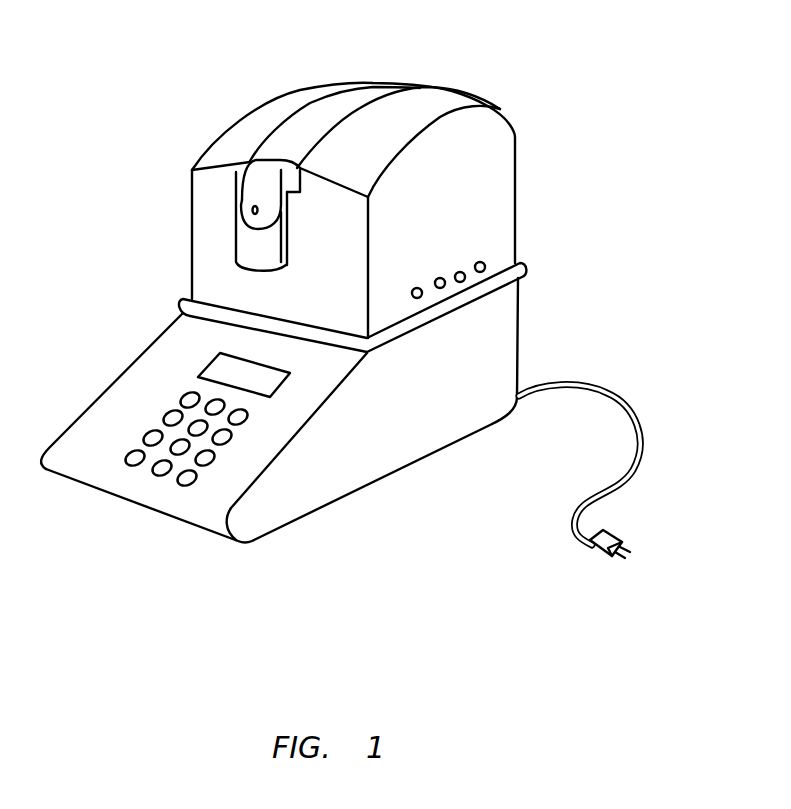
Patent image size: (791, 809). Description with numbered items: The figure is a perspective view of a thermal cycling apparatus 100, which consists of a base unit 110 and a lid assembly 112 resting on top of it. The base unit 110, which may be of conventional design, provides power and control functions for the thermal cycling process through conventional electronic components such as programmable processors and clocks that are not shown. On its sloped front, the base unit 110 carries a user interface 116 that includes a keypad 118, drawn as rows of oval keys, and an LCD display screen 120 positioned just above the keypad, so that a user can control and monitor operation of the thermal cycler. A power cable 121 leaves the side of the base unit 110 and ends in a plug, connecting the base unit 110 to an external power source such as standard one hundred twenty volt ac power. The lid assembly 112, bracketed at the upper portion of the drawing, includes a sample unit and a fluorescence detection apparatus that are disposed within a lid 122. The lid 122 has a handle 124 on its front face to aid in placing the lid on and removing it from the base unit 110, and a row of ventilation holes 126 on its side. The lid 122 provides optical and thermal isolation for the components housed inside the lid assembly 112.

The thermal cycling apparatus 100 is at (150, 60).
The base unit 110 is at (299, 506).
The lid assembly 112 is at (555, 272).
The user interface 116 is at (147, 387).
The keypad 118 is at (228, 437).
The LCD display screen 120 is at (268, 358).
The power cable 121 is at (607, 390).
The lid 122 is at (192, 200).
The handle 124 is at (263, 238).
The ventilation holes 126 is at (479, 261).